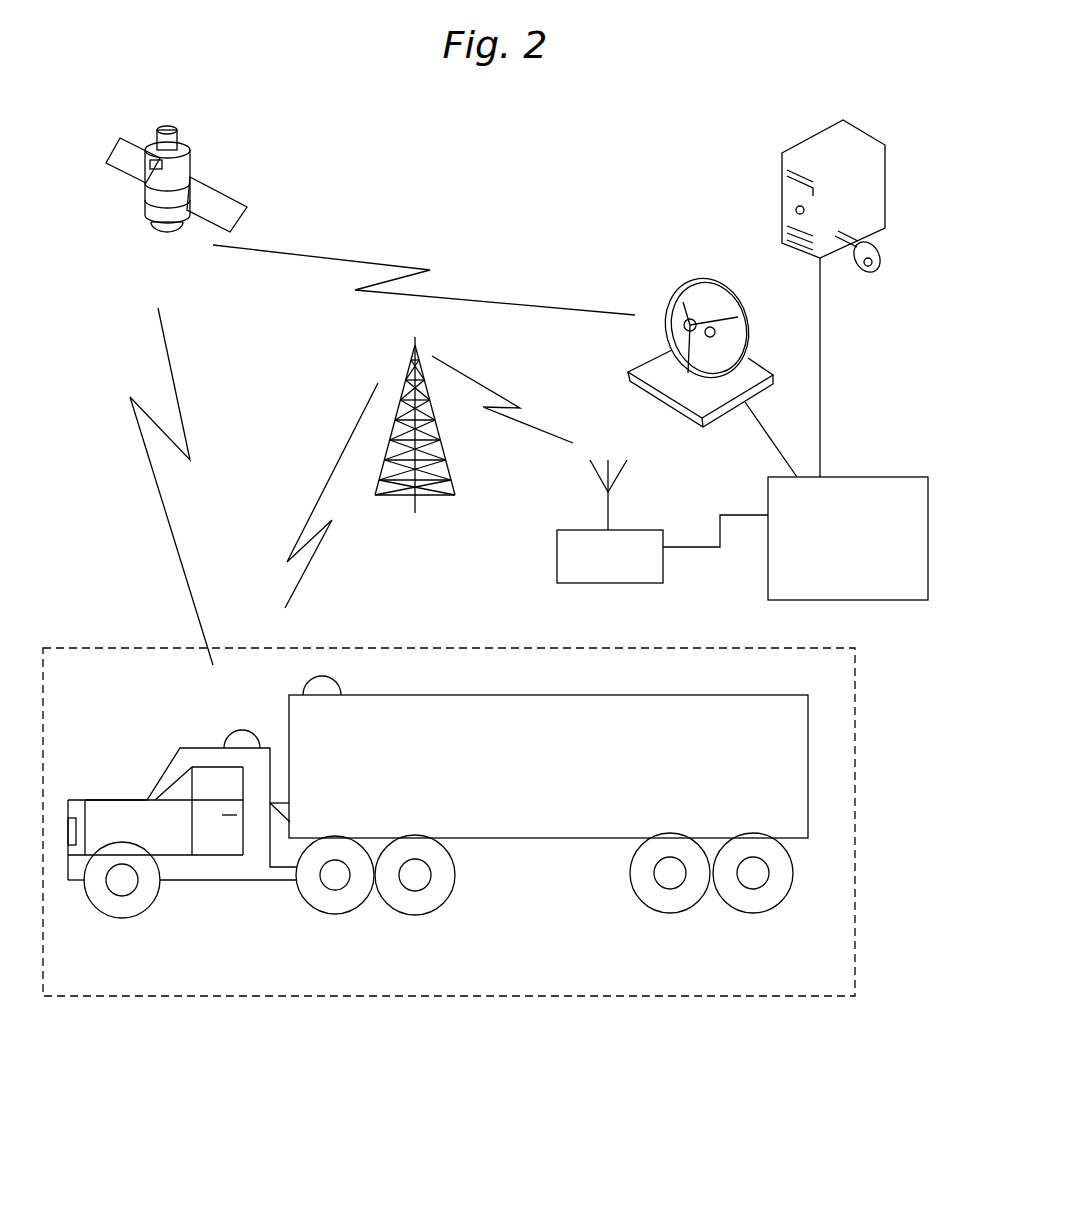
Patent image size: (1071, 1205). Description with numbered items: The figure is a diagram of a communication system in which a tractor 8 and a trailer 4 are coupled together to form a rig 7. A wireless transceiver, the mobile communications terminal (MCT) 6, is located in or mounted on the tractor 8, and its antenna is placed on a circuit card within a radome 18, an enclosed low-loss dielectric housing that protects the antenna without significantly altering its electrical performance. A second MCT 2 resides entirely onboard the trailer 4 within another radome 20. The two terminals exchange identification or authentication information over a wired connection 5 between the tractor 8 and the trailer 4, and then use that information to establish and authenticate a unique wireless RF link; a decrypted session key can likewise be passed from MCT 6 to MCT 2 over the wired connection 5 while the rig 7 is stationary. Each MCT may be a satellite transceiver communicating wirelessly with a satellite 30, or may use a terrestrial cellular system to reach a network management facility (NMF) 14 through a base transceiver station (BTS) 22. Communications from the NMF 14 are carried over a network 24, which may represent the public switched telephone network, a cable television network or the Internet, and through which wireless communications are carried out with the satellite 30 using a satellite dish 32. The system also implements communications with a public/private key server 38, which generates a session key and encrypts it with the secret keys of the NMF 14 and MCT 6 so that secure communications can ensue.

The mobile communications terminal (MCT) 2 is at (548, 753).
The trailer 4 is at (548, 766).
The wired connection 5 is at (293, 822).
The mobile communications terminal (MCT) 6 is at (261, 769).
The rig 7 is at (433, 997).
The tractor 8 is at (138, 827).
The network management facility (NMF) 14 is at (662, 521).
The radome 18 is at (240, 733).
The radome 20 is at (332, 678).
The base transceiver station (BTS) 22 is at (410, 358).
The network 24 is at (848, 538).
The satellite 30 is at (212, 203).
The satellite dish 32 is at (707, 277).
The public/private key server 38 is at (778, 200).